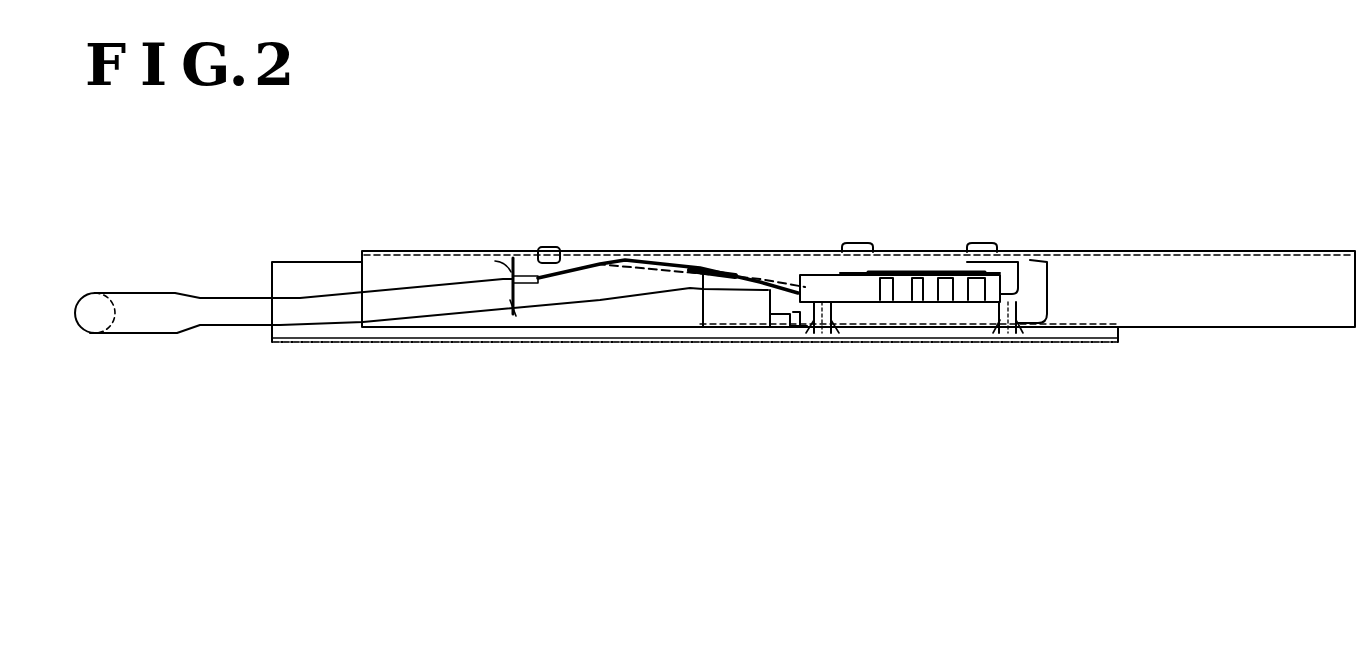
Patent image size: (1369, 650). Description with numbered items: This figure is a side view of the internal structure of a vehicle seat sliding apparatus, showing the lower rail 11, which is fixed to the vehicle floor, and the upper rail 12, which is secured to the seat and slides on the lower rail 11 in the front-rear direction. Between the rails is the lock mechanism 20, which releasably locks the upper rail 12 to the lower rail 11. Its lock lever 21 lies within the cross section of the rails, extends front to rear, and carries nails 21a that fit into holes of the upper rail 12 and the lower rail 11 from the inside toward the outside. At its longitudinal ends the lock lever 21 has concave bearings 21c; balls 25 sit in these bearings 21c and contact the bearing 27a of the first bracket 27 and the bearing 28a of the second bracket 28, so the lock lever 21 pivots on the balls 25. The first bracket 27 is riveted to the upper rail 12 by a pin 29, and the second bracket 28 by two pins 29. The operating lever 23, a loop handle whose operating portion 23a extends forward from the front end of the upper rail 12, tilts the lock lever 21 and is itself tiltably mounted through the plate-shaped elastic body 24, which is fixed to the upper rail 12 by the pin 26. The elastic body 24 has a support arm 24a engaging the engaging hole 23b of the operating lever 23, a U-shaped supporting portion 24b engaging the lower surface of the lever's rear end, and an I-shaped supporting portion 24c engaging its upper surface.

The lower rail 11 is at (612, 343).
The upper rail 12 is at (1216, 250).
The lock mechanism 20 is at (893, 472).
The lock lever 21 is at (913, 305).
The nails 21a is at (957, 270).
The bearings 21c is at (831, 333).
The operating lever 23 is at (233, 304).
The operating portion 23a is at (105, 296).
The engaging hole 23b is at (509, 276).
The elastic body 24 is at (621, 258).
The support arm 24a is at (513, 316).
The U-shaped supporting portion 24b is at (703, 328).
The I-shaped supporting portion 24c is at (745, 276).
The balls 25 is at (823, 331).
The pin 26 is at (547, 247).
The first bracket 27 is at (1050, 288).
The bearing 27a is at (1022, 335).
The second bracket 28 is at (772, 330).
The bearing 28a is at (811, 330).
The pins 29 is at (855, 243).